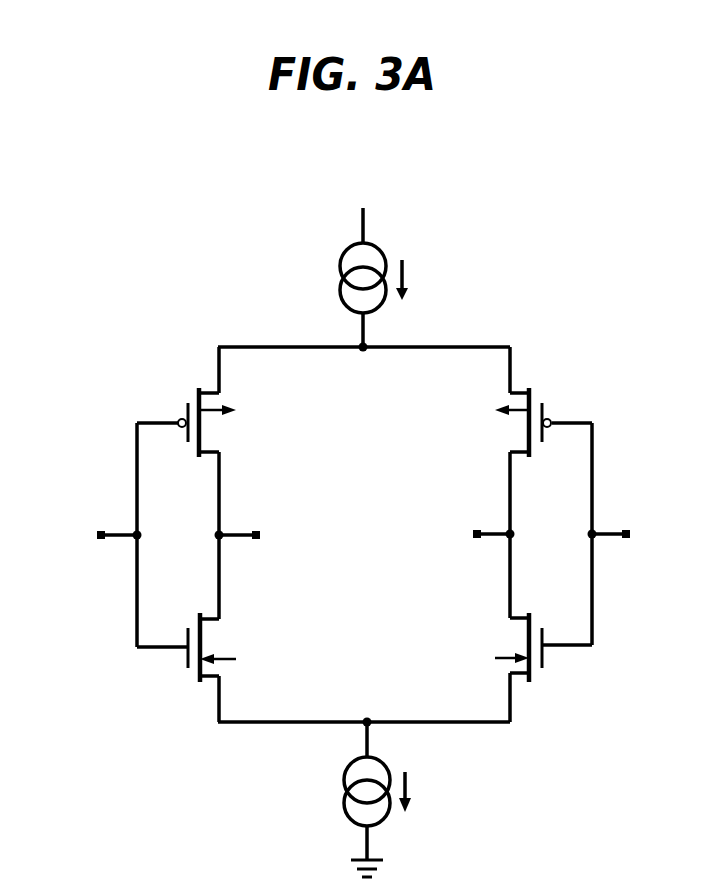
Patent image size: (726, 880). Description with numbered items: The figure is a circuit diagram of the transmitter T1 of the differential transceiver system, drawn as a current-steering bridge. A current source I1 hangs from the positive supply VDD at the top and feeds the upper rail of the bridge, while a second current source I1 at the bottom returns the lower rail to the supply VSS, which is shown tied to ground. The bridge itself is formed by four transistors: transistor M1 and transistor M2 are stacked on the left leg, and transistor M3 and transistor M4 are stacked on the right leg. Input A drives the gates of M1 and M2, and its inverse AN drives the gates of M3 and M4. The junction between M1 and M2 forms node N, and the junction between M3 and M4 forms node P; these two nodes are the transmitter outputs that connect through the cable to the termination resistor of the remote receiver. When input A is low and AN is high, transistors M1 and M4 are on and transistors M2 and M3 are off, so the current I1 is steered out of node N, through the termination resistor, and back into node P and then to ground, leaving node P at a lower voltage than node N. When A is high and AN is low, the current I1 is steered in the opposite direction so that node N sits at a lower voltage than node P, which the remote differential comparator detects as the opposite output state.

The transmitter T1 is at (378, 137).
The positive supply voltage VDD is at (334, 224).
The negative supply voltage / ground VSS is at (347, 850).
The current I1 is at (392, 551).
The transistor M1 is at (186, 409).
The transistor M2 is at (186, 660).
The transistor M3 is at (543, 409).
The transistor M4 is at (543, 659).
The input A is at (108, 536).
The node N is at (251, 536).
The node P is at (483, 535).
The inverse of input A AN is at (629, 535).